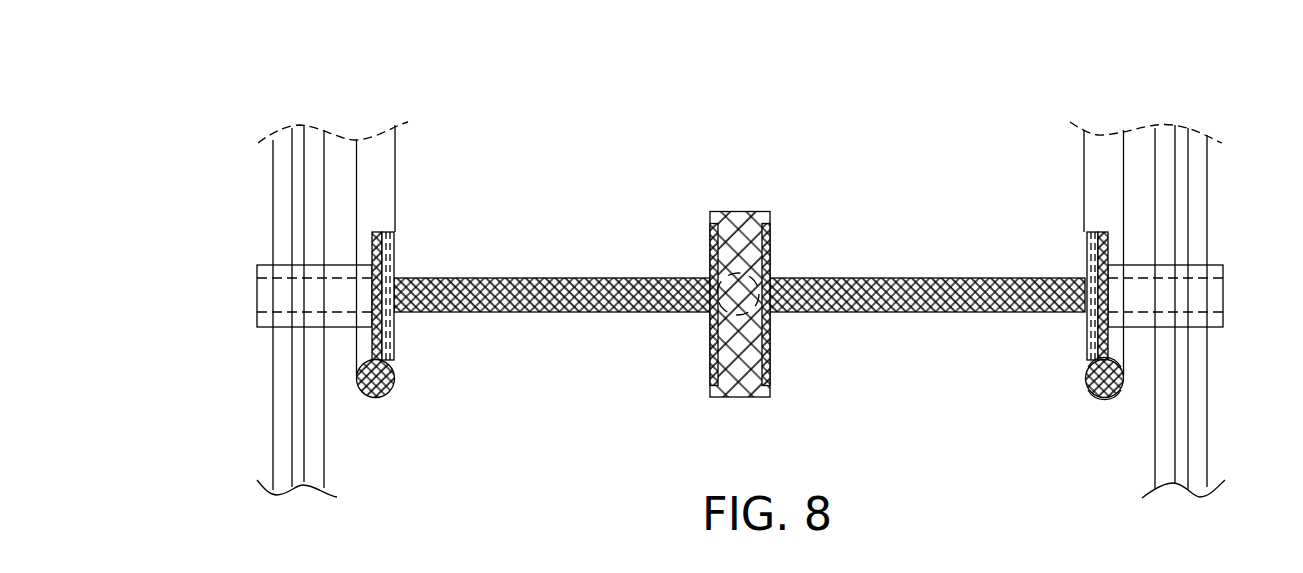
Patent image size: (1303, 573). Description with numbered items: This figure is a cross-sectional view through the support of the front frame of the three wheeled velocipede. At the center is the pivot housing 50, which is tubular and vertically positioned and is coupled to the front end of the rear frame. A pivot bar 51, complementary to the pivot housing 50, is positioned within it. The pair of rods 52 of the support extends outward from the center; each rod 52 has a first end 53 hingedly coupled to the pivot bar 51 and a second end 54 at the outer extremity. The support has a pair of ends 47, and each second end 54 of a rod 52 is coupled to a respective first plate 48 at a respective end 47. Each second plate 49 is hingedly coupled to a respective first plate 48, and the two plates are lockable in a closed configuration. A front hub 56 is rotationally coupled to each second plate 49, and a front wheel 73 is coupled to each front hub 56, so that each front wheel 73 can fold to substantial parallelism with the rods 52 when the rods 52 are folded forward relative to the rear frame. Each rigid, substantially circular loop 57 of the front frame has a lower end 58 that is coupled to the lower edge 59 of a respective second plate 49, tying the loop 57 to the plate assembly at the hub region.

The end 47 is at (393, 276).
The first plate 48 is at (1088, 231).
The second plate 49 is at (1108, 230).
The pivot housing 50 is at (679, 256).
The pivot bar 51 is at (708, 279).
The rod 52 is at (930, 277).
The first end 53 is at (708, 313).
The second end 54 is at (395, 316).
The front hub 56 is at (310, 298).
The loop 57 is at (1090, 383).
The lower end 58 is at (1098, 400).
The lower edge 59 is at (1110, 364).
The front wheel 73 is at (273, 187).